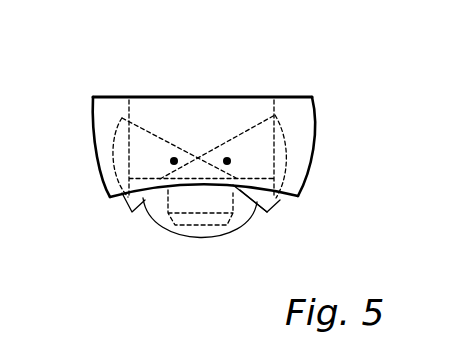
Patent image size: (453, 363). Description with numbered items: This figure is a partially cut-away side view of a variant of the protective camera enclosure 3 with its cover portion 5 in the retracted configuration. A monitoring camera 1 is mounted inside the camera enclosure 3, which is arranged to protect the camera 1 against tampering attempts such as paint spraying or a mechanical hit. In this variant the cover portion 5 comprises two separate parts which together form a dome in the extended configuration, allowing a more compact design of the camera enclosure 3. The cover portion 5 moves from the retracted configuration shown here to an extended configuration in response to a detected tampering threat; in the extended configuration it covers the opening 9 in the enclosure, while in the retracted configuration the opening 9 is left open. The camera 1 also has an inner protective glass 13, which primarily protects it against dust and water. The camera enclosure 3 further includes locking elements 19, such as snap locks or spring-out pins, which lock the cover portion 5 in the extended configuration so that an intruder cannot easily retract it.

The monitoring camera 1 is at (178, 203).
The protective camera enclosure 3 is at (297, 97).
The cover portion 5 is at (126, 207).
The opening 9 is at (270, 220).
The inner protective glass 13 is at (218, 238).
The locking element 19 is at (174, 161).